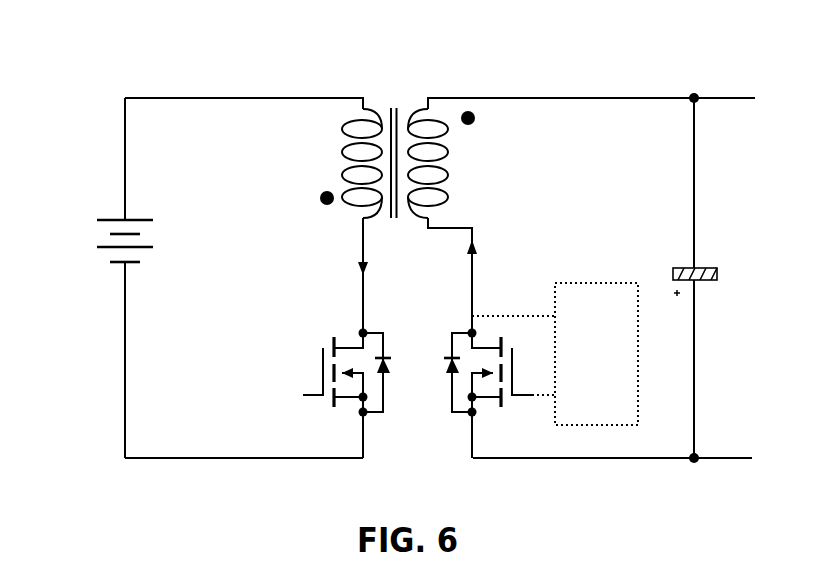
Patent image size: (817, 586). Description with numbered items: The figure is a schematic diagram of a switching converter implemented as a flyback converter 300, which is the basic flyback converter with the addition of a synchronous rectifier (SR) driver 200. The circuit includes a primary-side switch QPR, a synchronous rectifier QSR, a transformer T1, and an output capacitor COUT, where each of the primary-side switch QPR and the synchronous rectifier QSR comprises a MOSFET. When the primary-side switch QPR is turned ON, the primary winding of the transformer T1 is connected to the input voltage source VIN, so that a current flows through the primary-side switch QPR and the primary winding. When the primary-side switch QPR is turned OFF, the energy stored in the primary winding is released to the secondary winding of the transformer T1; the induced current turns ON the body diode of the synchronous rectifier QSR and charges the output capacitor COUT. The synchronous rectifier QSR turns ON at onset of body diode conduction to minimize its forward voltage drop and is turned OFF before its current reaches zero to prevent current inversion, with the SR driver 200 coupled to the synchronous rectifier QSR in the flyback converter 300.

The flyback converter 300 is at (285, 56).
The synchronous rectifier (SR) driver 200 is at (570, 283).
The transformer T1 is at (397, 138).
The primary-side switch QPR is at (341, 364).
The synchronous rectifier QSR is at (468, 364).
The input voltage source VIN is at (98, 241).
The output capacitor COUT is at (726, 280).